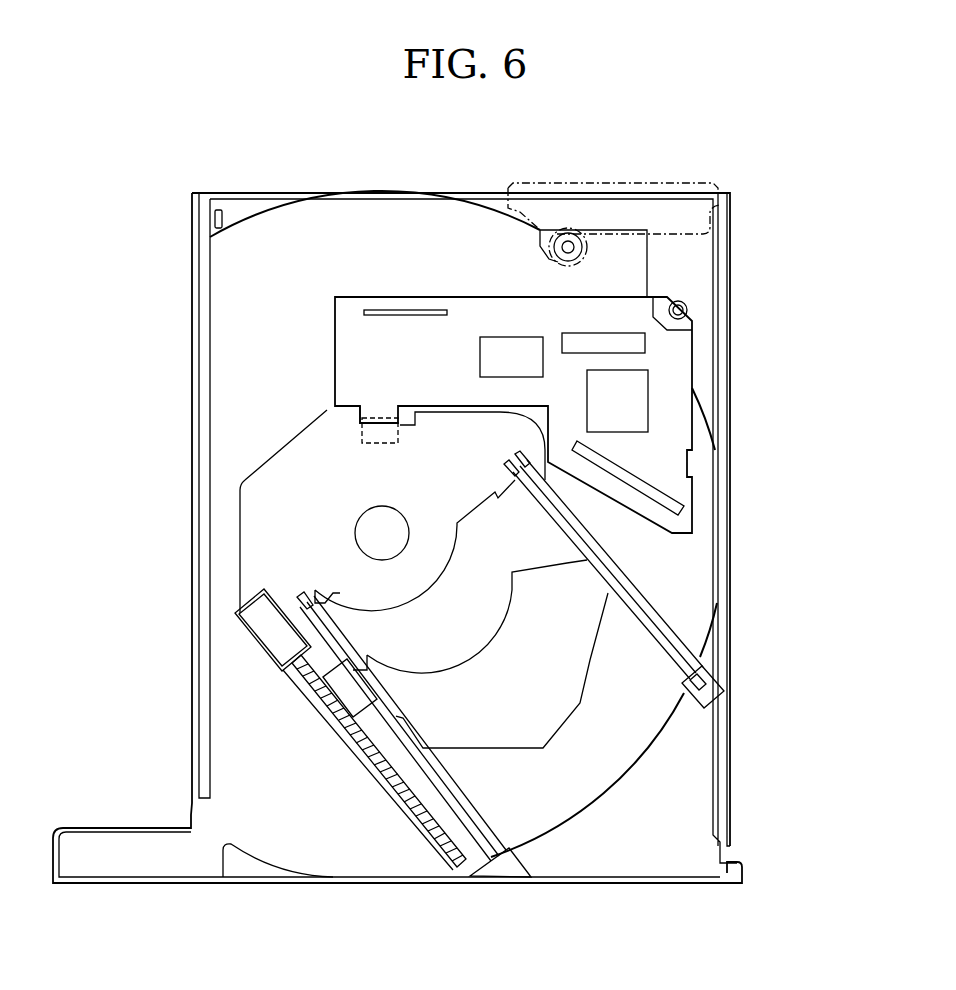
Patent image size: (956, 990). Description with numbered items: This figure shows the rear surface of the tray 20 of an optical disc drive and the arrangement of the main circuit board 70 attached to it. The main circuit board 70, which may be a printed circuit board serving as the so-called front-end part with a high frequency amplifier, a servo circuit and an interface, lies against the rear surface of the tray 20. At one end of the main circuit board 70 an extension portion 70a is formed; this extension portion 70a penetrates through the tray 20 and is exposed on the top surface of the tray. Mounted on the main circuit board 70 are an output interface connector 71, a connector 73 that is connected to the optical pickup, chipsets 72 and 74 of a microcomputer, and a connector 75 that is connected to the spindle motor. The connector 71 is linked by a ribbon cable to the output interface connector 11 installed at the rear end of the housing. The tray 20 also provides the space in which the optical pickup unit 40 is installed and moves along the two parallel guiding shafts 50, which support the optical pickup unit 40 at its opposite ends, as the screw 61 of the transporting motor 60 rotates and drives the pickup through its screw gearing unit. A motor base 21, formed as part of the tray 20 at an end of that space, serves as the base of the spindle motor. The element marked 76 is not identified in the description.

The output interface connector 11 is at (623, 183).
The tray 20 is at (632, 890).
The motor base 21 is at (427, 583).
The optical pickup unit 40 is at (552, 718).
The guiding shafts 50 is at (653, 640).
The transporting motor 60 is at (258, 623).
The screw 61 is at (296, 680).
The main circuit board 70 is at (328, 335).
The extension portion 70a is at (362, 444).
The output interface connector 71 is at (605, 333).
The chipset 72 is at (510, 337).
The connector 73 is at (682, 500).
The chipset 74 is at (643, 400).
The connector 75 is at (405, 310).
The notch of circuit board 76 is at (360, 437).